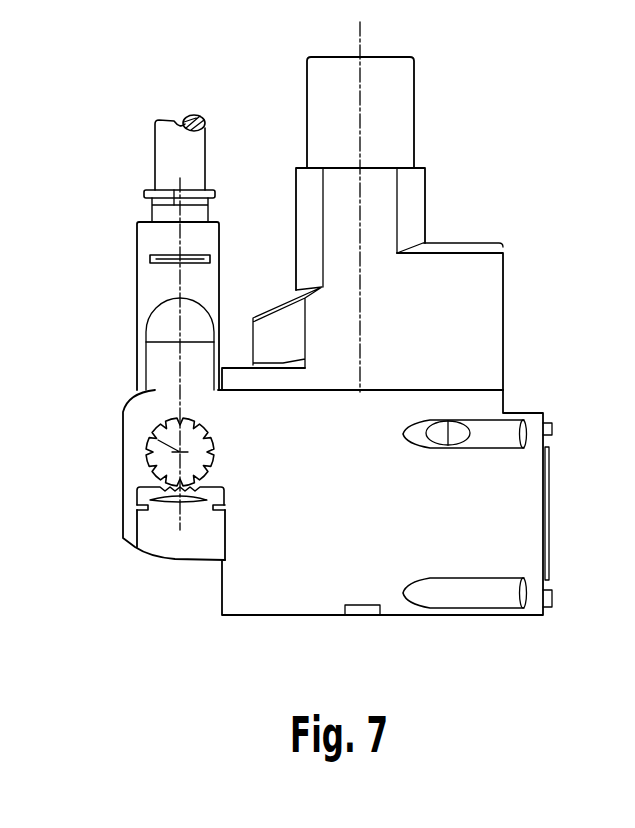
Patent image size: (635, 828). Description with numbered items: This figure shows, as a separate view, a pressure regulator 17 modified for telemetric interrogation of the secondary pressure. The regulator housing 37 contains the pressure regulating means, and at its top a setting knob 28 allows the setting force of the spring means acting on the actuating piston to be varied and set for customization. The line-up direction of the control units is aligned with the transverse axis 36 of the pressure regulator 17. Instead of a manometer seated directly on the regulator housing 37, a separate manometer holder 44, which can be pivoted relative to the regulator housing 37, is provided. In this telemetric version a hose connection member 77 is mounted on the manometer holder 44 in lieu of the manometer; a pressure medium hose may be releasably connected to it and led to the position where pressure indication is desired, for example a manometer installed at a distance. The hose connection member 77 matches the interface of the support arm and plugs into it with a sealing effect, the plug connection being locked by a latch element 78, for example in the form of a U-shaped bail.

The pressure regulator 17 is at (470, 236).
The setting knob 28 is at (395, 92).
The transverse axis 36 is at (156, 435).
The regulator housing 37 is at (512, 500).
The manometer holder 44 is at (137, 316).
The hose connection member 77 is at (147, 212).
The latch element 78 is at (150, 258).